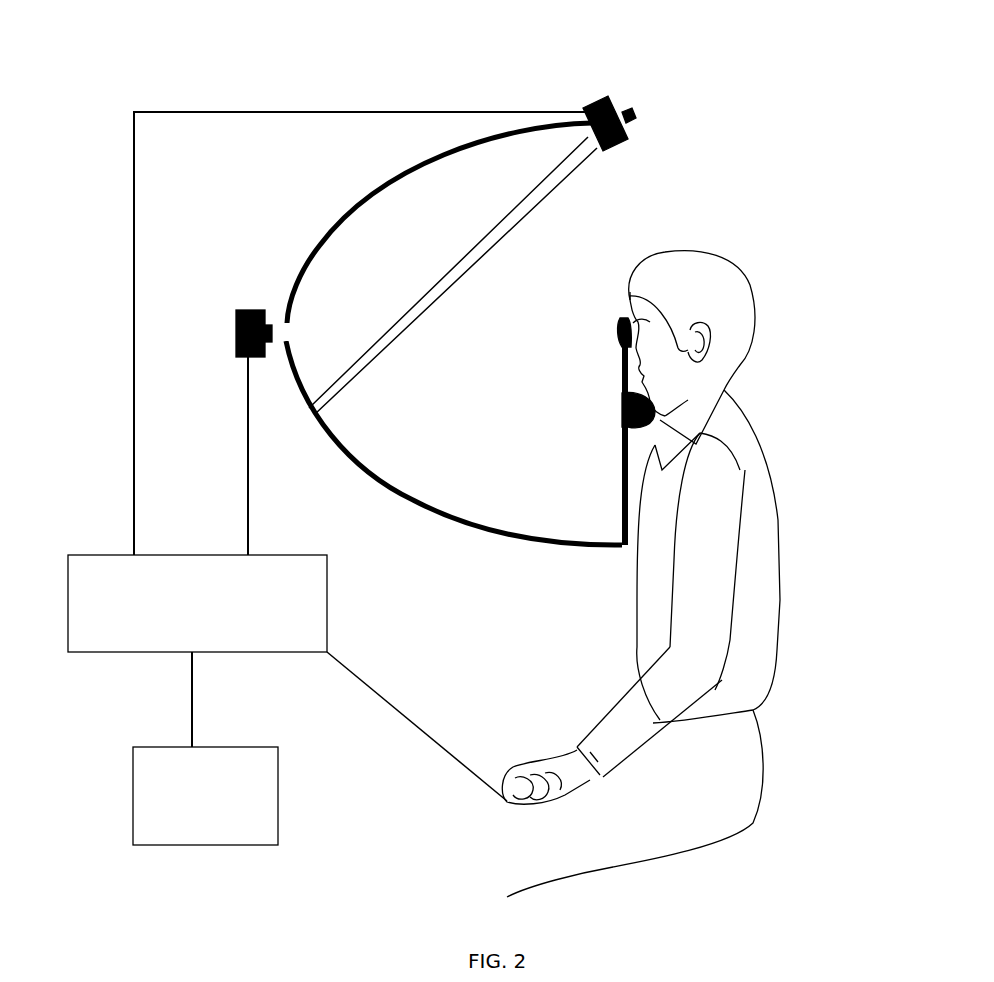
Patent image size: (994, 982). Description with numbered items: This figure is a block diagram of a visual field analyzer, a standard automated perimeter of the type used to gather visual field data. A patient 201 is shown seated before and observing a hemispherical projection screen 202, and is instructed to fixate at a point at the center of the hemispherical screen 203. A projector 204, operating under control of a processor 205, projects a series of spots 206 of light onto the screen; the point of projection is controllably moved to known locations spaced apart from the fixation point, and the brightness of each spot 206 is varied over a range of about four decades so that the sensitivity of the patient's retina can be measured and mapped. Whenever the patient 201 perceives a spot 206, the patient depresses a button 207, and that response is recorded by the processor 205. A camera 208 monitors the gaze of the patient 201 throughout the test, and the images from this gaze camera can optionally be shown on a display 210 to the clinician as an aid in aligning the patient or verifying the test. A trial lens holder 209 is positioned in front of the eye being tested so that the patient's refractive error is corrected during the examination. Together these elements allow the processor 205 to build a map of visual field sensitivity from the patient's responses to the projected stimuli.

The patient 201 is at (660, 538).
The hemispherical projection screen 202 is at (400, 168).
The center of the hemispherical screen 203 is at (292, 333).
The projector 204 is at (617, 100).
The processor 205 is at (92, 654).
The spots 206 is at (307, 425).
The button 207 is at (509, 763).
The camera 208 is at (243, 305).
The trial lens holder 209 is at (622, 305).
The display 210 is at (135, 792).